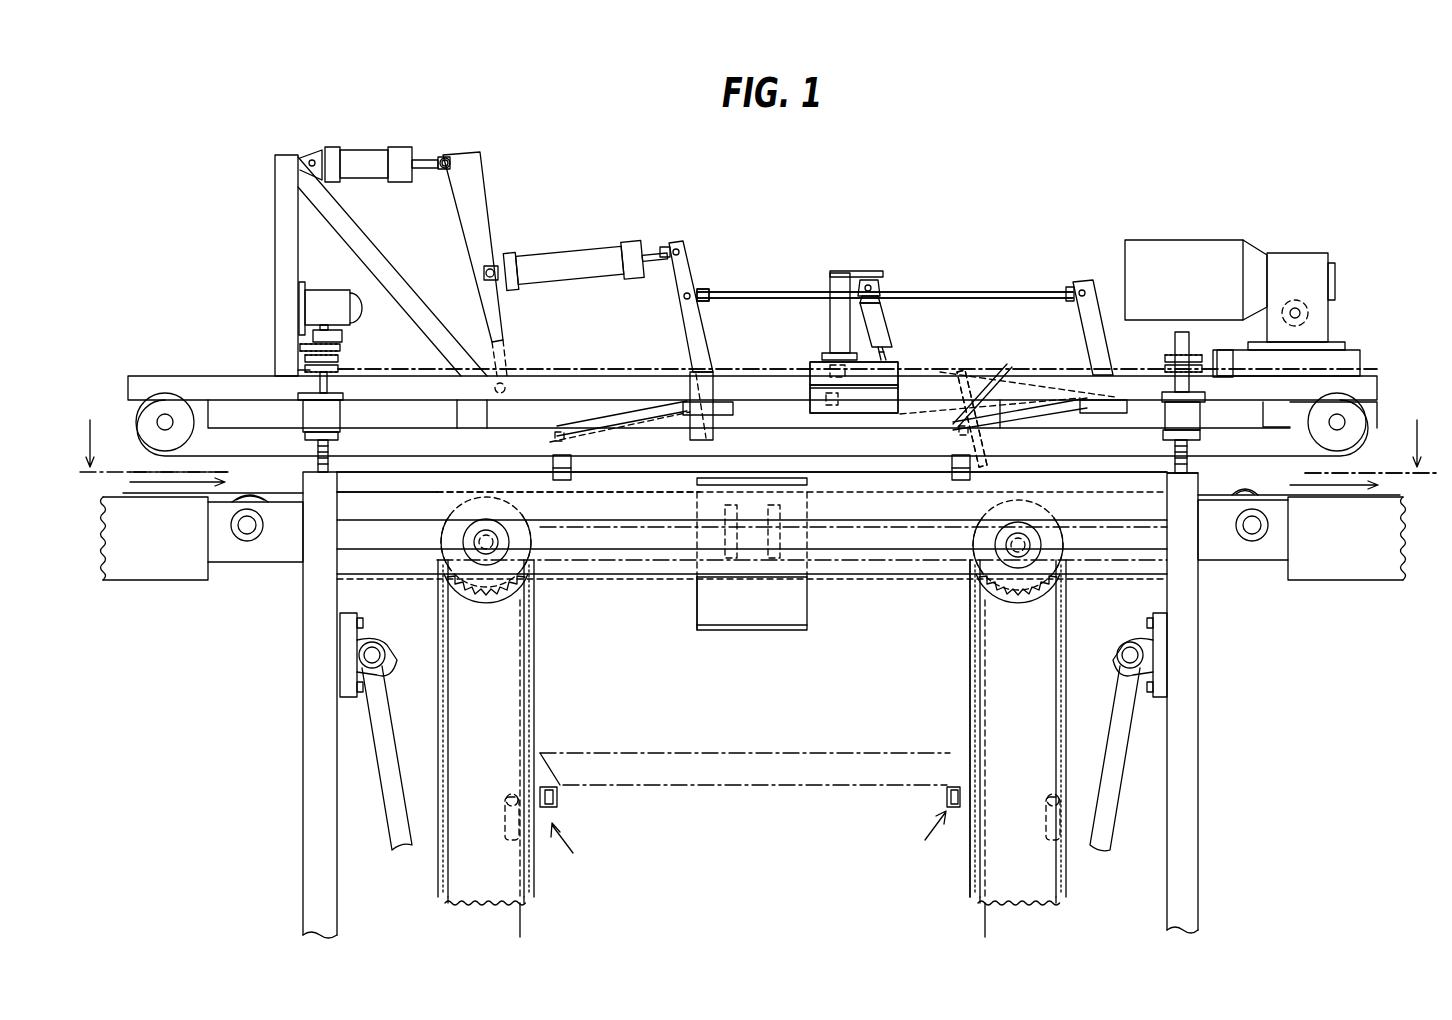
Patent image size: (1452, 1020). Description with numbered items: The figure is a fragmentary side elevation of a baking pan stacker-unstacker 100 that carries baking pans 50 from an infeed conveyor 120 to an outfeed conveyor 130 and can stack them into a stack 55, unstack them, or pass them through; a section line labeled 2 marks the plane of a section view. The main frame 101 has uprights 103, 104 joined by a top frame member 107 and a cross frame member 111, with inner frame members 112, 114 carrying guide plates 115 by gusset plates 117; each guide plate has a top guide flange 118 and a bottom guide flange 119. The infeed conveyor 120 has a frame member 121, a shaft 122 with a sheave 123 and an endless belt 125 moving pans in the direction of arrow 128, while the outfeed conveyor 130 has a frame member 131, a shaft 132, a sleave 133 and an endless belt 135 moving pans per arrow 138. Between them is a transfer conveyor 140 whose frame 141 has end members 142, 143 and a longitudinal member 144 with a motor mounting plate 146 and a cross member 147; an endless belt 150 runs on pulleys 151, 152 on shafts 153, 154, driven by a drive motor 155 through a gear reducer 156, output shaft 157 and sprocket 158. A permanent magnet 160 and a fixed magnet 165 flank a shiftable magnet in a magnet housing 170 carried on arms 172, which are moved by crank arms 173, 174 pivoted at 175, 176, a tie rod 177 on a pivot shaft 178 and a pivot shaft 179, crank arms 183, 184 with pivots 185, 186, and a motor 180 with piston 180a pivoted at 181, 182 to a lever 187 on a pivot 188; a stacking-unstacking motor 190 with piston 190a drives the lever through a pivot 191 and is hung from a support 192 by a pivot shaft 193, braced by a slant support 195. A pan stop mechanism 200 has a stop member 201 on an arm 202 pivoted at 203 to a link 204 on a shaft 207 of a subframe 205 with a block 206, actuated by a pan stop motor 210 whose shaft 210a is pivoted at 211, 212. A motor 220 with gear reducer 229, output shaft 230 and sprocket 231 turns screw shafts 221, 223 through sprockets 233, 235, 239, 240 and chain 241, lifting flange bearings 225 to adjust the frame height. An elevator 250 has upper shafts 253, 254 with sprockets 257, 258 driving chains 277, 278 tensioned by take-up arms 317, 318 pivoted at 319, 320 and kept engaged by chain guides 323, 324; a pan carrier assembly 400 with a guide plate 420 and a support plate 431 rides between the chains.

The baking pan stacker-unstacker 100 is at (983, 173).
The main frame 101 is at (1245, 868).
The upright 103 is at (302, 898).
The upright 104 is at (1200, 908).
The top frame member 107 is at (430, 512).
The cross frame member 111 is at (382, 552).
The inner frame member 112 is at (1076, 510).
The inner frame member 114 is at (1075, 560).
The guide plate 115 is at (694, 610).
The gusset plate 117 is at (725, 538).
The top guide flange 118 is at (808, 482).
The bottom guide flange 119 is at (808, 619).
The infeed conveyor 120 is at (168, 594).
The frame member 121 is at (275, 562).
The shaft 122 is at (256, 528).
The sheave 123 is at (265, 495).
The endless belt 125 is at (100, 487).
The arrow 128 is at (218, 480).
The outfeed conveyor 130 is at (1362, 592).
The frame member 131 is at (1280, 562).
The shaft 132 is at (1250, 532).
The sleave 133 is at (1245, 490).
The endless belt 135 is at (1400, 489).
The arrow 138 is at (1290, 483).
The transfer conveyor 140 is at (772, 262).
The frame 141 is at (1380, 378).
The end member 142 is at (322, 413).
The end member 143 is at (1200, 418).
The longitudinal member 144 is at (222, 378).
The motor mounting plate 146 is at (1343, 350).
The cross member 147 is at (1235, 365).
The endless belt 150 is at (490, 460).
The pulley 151 is at (150, 438).
The pulley 152 is at (1350, 448).
The shaft 153 is at (180, 418).
The shaft 154 is at (1348, 425).
The drive motor 155 is at (1172, 248).
The gear reducer 156 is at (1298, 260).
The output shaft 157 is at (1302, 313).
The sprocket 158 is at (1300, 305).
The permanent magnet 160 is at (263, 440).
The fixed magnet 165 is at (1270, 438).
The magnet housing 170 is at (640, 492).
The arm 172 is at (553, 470).
The crank arm 173 is at (1050, 420).
The crank arm 174 is at (1098, 283).
The pivot 175 is at (1062, 392).
The pivot 176 is at (960, 440).
The tie rod 177 is at (1003, 292).
The pivot shaft 178 is at (1072, 288).
The pivot shaft 179 is at (691, 292).
The motor 180 is at (572, 250).
The piston 180a is at (662, 246).
The pivot 181 is at (680, 248).
The pivot 182 is at (485, 272).
The crank arm 183 is at (590, 418).
The crank arm 184 is at (690, 350).
The pivot 185 is at (735, 410).
The pivot 186 is at (548, 442).
The lever 187 is at (490, 220).
The pivot 188 is at (494, 389).
The stacking-unstacking motor 190 is at (366, 155).
The piston 190a is at (447, 155).
The pivot 191 is at (444, 170).
The support 192 is at (278, 204).
The pivot shaft 193 is at (313, 160).
The slant support 195 is at (403, 252).
The pan stop mechanism 200 is at (915, 337).
The stop member 201 is at (1010, 378).
The arm 202 is at (945, 372).
The pivot 203 is at (832, 408).
The link 204 is at (810, 387).
The subframe 205 is at (830, 330).
The block 206 is at (892, 412).
The shaft 207 is at (826, 368).
The pan stop motor 210 is at (888, 325).
The shaft 210a is at (887, 355).
The pivot 211 is at (883, 283).
The pivot 212 is at (880, 414).
The motor 220 is at (358, 295).
The screw shaft 221 is at (332, 444).
The screw shaft 223 is at (1172, 466).
The flange bearing 225 is at (298, 396).
The gear reducer 229 is at (322, 290).
The output shaft 230 is at (344, 336).
The sprocket 231 is at (341, 347).
The sprocket 233 is at (339, 358).
The sprocket 235 is at (1166, 360).
The sprocket 239 is at (305, 365).
The sprocket 240 is at (1115, 390).
The chain 241 is at (625, 369).
The elevator 250 is at (932, 910).
The upper shaft 253 is at (485, 542).
The upper shaft 254 is at (1017, 545).
The sprocket 257 is at (488, 596).
The sprocket 258 is at (1018, 596).
The chain 277 is at (440, 640).
The chain 278 is at (1070, 643).
The take-up arm 317 is at (393, 848).
The take-up arm 318 is at (1100, 850).
The pivot 319 is at (372, 645).
The pivot 320 is at (1130, 645).
The chain guide 323 is at (473, 910).
The chain guide 324 is at (1030, 910).
The pan carrier assembly 400 is at (748, 840).
The guide plate 420 is at (505, 815).
The support plate 431 is at (555, 788).
The baking pan 50 is at (733, 792).
The stack 55 is at (990, 722).
The section line 2- 2 is at (760, 435).